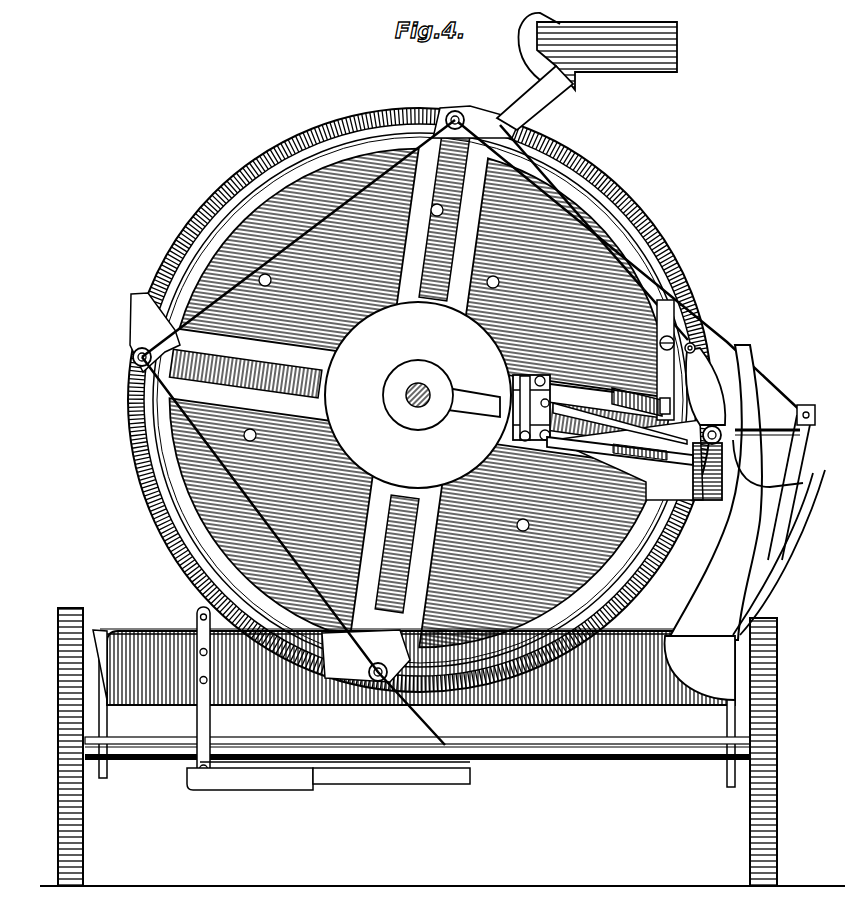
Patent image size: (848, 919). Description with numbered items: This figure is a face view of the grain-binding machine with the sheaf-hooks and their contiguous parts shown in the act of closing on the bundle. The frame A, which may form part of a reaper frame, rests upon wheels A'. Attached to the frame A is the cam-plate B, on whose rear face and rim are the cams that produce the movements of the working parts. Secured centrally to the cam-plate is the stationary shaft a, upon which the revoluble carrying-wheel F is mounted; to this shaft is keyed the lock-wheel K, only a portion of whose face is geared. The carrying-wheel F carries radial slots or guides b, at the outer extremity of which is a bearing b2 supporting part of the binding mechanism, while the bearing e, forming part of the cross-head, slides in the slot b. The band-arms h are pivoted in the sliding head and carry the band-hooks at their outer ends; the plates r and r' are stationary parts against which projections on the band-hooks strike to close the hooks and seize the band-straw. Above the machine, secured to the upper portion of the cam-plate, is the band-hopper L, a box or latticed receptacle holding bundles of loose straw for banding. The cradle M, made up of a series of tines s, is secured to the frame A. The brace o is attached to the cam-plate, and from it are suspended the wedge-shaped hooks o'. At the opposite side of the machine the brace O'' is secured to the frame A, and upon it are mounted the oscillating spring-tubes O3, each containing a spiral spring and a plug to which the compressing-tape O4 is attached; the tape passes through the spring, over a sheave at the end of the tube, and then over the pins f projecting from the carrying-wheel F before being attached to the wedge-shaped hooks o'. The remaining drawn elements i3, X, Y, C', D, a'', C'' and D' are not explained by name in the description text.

The frame A is at (442, 497).
The wheels A' is at (417, 747).
The brace O'' is at (250, 698).
The rod i3 is at (248, 752).
The spring-tubes O3 is at (391, 780).
The carrying-wheel F is at (420, 388).
The window opening X is at (465, 246).
The cam-plate B is at (550, 406).
The window opening Y is at (257, 378).
The lock-wheel K is at (418, 395).
The arm C' is at (441, 395).
The stationary shaft a is at (423, 393).
The pins f is at (315, 388).
The radial slots or guides b is at (298, 238).
The compressing-tape O4 is at (473, 433).
The band-hopper L is at (607, 56).
The plate r' is at (539, 46).
The plate r is at (539, 98).
The brace rod D is at (605, 272).
The bearing e is at (531, 408).
The rod a'' is at (582, 394).
The band-arms h is at (620, 419).
The bar C'' is at (620, 444).
The bearing b2 is at (708, 421).
The cradle M is at (713, 522).
The tines s is at (756, 552).
The guide plate D' is at (768, 477).
The brace o is at (767, 440).
The wedge-shaped hooks o' is at (791, 482).